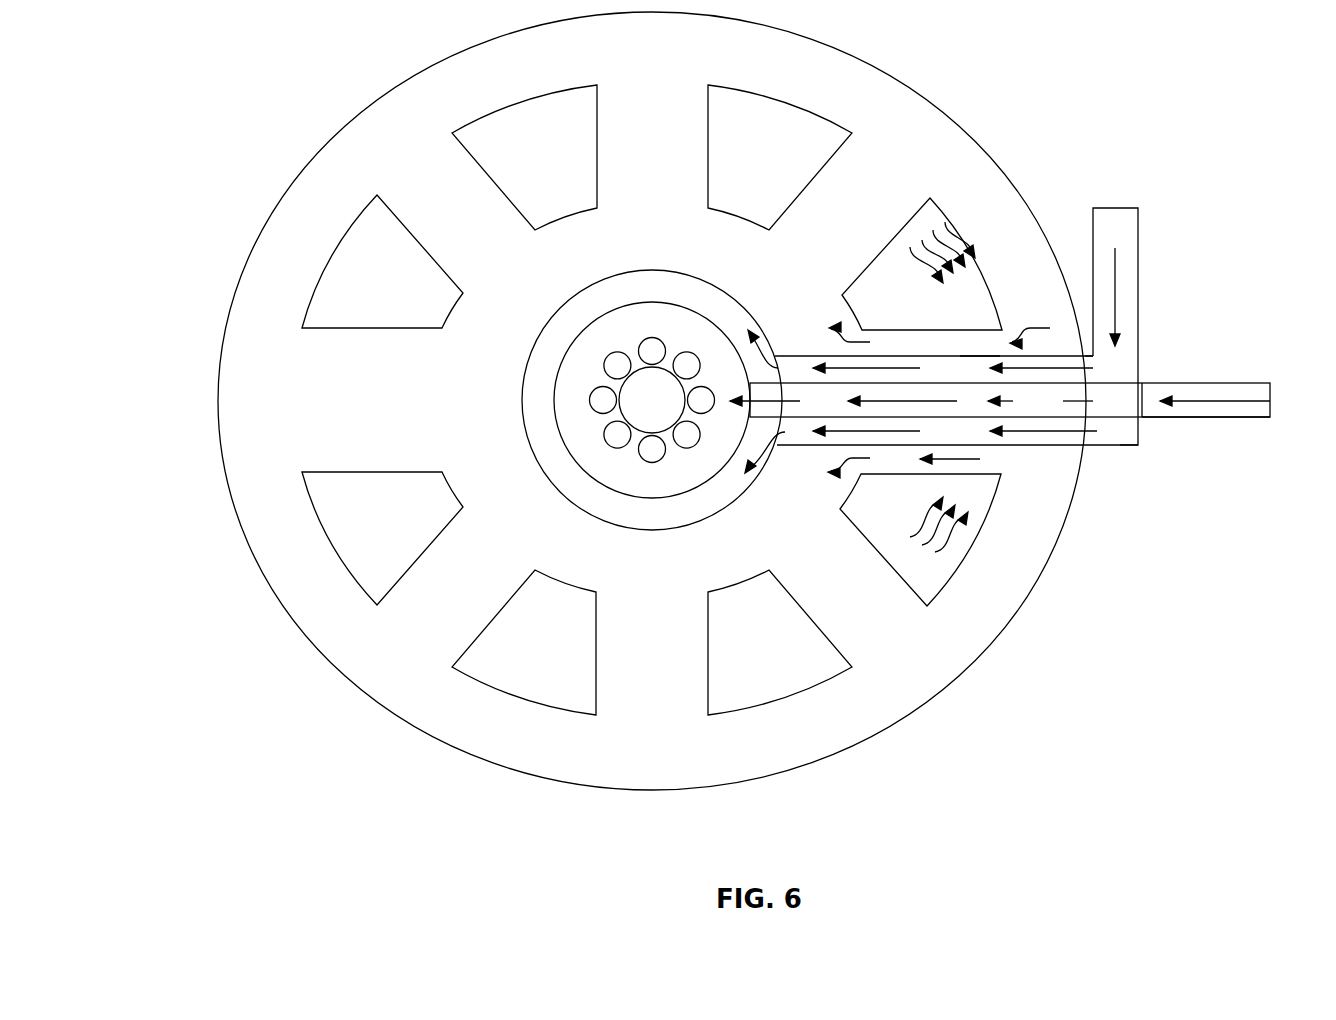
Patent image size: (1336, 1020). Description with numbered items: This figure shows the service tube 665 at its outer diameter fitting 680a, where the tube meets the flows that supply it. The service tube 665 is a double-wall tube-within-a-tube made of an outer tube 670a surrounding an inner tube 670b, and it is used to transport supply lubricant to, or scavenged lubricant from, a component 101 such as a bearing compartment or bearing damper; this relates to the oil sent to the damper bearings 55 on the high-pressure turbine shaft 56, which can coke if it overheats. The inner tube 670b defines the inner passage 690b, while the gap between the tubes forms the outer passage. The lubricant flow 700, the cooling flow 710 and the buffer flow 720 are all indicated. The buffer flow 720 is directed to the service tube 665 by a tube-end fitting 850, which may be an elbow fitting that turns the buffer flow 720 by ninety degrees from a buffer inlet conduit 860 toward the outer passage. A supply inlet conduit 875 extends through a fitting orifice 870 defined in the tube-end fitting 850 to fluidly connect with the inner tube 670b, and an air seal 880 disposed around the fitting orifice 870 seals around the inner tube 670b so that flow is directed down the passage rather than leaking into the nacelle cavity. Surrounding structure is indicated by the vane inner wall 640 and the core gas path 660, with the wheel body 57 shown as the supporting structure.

The damper bearings 55 is at (688, 365).
The high-pressure turbine shaft 56 is at (638, 382).
The wheel 57 is at (678, 579).
The component 101 is at (690, 475).
The vane inner wall 640 is at (980, 477).
The core gas path 660 is at (923, 303).
The service tube 665 is at (890, 447).
The outer tube 670a is at (1003, 446).
The inner tube 670b is at (1150, 418).
The outer diameter fitting 680a is at (1086, 352).
The inner passage 690b is at (833, 383).
The lubricant flow 700 is at (1060, 413).
The cooling flow 710 is at (978, 350).
The buffer flow 720 is at (1137, 197).
The tube-end fitting 850 is at (1120, 452).
The buffer inlet conduit 860 is at (1127, 291).
The fitting orifice 870 is at (1148, 392).
The supply inlet conduit 875 is at (1243, 418).
The air seal 880 is at (1145, 375).